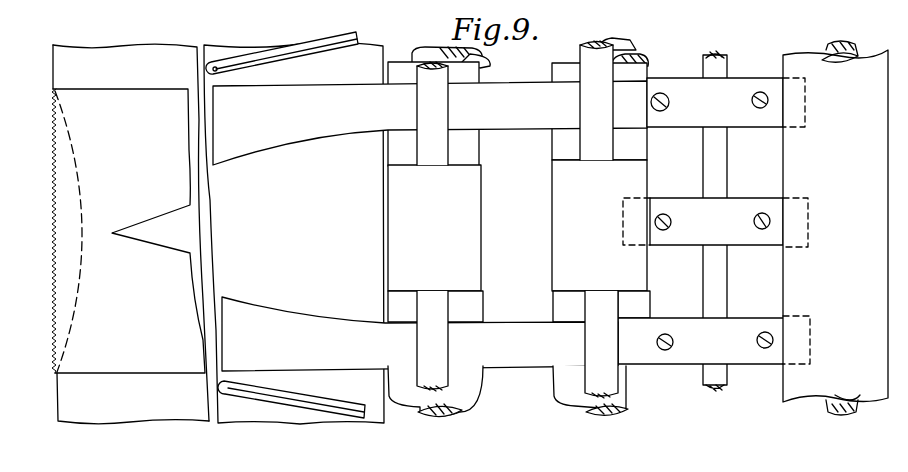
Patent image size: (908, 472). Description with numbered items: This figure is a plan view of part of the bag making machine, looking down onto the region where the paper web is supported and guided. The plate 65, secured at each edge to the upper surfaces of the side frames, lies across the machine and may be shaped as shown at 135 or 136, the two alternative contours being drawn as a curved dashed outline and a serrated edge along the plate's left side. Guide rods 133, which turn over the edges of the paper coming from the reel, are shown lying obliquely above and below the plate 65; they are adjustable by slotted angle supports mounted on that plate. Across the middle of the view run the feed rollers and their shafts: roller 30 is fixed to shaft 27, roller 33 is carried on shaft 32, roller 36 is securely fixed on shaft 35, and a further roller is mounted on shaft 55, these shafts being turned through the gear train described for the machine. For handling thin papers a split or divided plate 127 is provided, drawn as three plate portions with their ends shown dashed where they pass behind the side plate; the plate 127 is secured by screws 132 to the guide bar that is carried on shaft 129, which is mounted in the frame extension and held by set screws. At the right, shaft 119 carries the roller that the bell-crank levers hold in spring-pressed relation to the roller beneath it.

The shaft 27 is at (438, 410).
The roller 30 is at (477, 383).
The shaft 32 is at (590, 411).
The roller 33 is at (635, 379).
The shaft 35 is at (602, 342).
The roller 36 is at (580, 162).
The shaft 55 is at (442, 355).
The plate 65 is at (131, 234).
The shaft 119 is at (835, 50).
The split or divided plate 127 is at (688, 88).
The shaft 129 is at (720, 63).
The screws 132 is at (660, 215).
The guide rods 133 is at (328, 45).
The plate shape 135 is at (80, 289).
The plate shape 136 is at (55, 193).